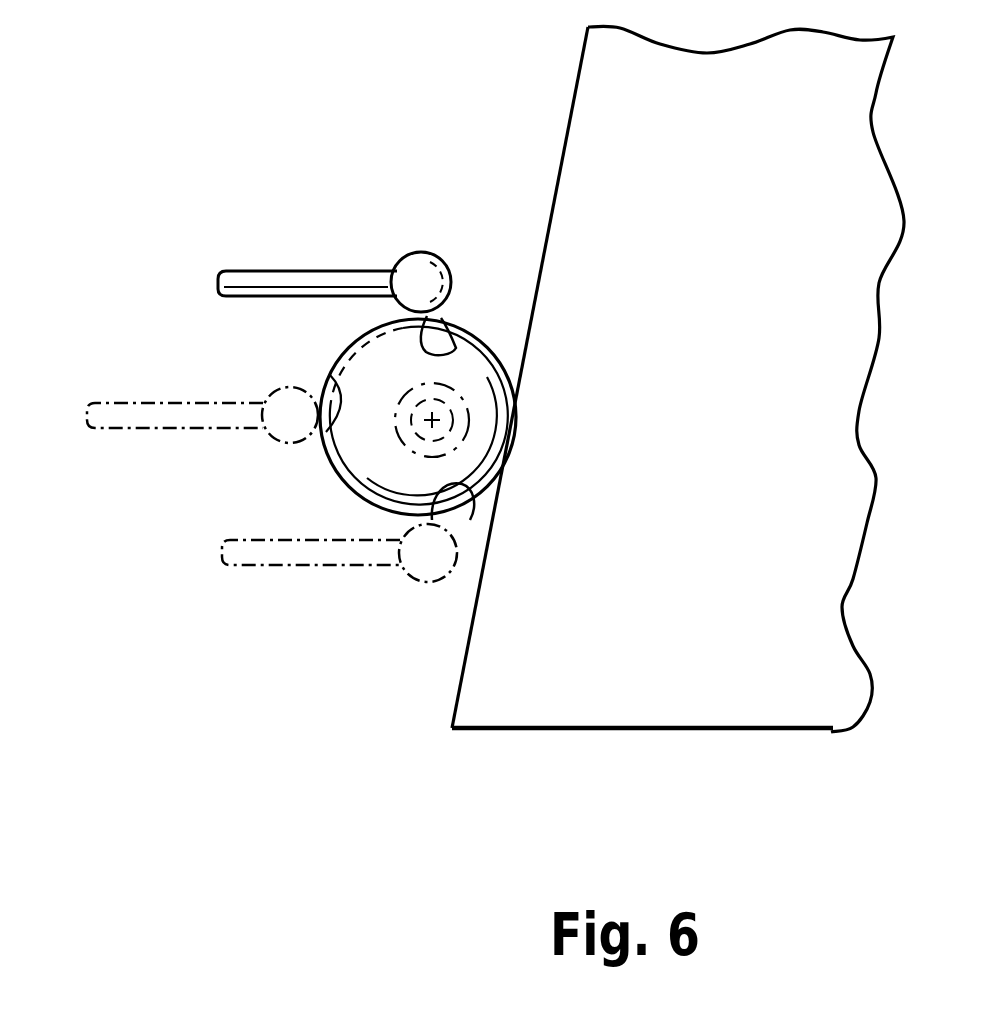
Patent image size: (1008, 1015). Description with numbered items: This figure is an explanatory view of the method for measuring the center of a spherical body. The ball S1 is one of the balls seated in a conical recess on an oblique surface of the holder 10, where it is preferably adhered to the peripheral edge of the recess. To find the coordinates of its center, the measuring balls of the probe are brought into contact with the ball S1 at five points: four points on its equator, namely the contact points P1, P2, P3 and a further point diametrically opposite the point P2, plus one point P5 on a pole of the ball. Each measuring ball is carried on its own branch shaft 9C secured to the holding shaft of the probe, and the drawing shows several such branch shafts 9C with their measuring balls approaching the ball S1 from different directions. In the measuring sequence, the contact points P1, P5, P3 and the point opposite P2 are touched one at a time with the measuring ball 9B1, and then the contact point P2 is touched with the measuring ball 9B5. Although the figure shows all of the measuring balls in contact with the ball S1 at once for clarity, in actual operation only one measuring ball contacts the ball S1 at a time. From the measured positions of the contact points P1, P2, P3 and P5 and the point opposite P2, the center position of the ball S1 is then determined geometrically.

The holder 10 is at (605, 92).
The measuring ball 9B5 is at (468, 440).
The measuring ball 9B1 is at (423, 277).
The branch shaft 9C is at (266, 271).
The ball S1 is at (447, 307).
The contact point P1 is at (467, 353).
The contact point P2 is at (470, 398).
The contact point P3 is at (492, 530).
The contact point P5 is at (333, 367).